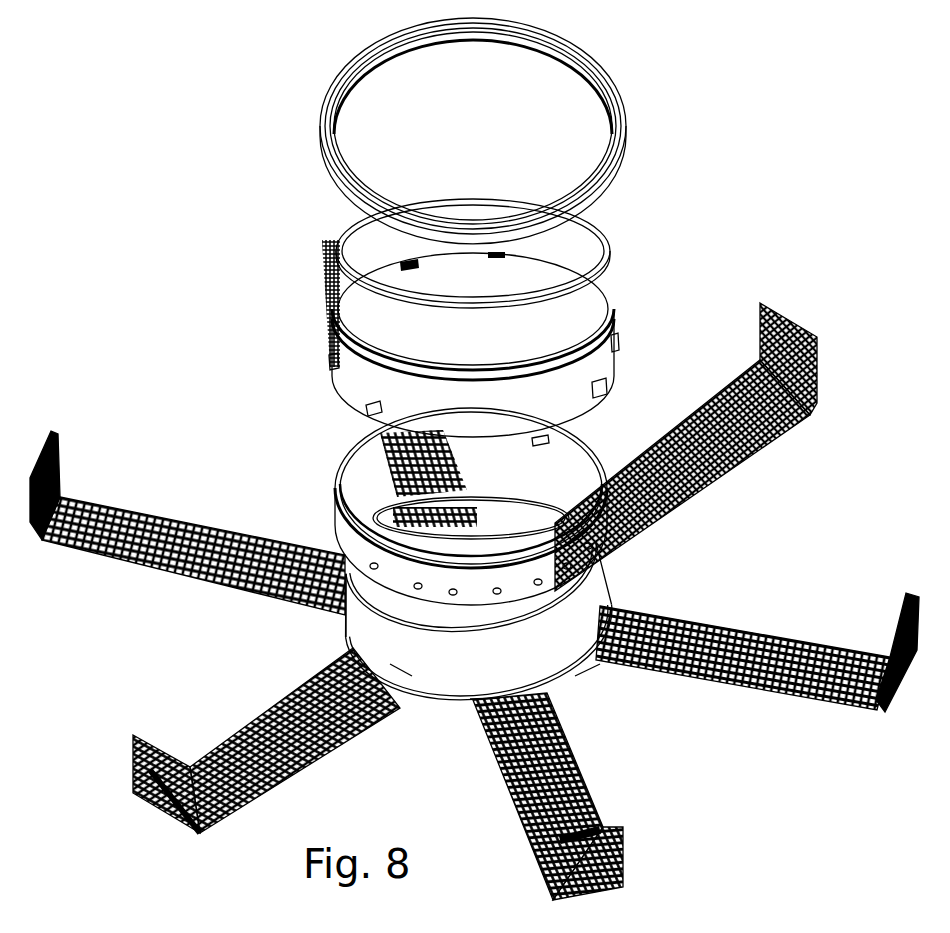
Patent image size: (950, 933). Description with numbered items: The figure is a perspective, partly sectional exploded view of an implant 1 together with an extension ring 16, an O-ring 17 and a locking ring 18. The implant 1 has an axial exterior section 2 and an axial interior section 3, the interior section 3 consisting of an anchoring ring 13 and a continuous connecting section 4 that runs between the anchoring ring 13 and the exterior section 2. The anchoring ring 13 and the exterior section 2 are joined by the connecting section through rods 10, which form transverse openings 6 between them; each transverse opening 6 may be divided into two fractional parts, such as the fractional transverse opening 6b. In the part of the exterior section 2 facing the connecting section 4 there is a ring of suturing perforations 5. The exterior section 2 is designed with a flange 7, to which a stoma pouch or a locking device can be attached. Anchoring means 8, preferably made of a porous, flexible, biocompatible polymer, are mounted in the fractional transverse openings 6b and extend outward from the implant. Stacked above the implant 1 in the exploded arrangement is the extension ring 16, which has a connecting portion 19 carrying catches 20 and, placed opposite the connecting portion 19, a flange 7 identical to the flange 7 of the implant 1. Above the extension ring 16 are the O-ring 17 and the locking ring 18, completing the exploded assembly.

The implant 1 is at (260, 470).
The axial exterior section 2 is at (593, 417).
The axial interior section 3 is at (600, 590).
The connecting section 4 is at (445, 637).
The suturing perforations 5 is at (532, 600).
The transverse openings 6 is at (360, 625).
The fractional transverse opening 6b is at (510, 678).
The flange 7 is at (336, 88).
The anchoring means 8 is at (805, 640).
The rods 10 is at (400, 670).
The anchoring ring 13 is at (590, 670).
The extension ring 16 is at (298, 343).
The O-ring 17 is at (323, 217).
The locking ring 18 is at (312, 140).
The connecting portion 19 is at (615, 362).
The catches 20 is at (490, 263).